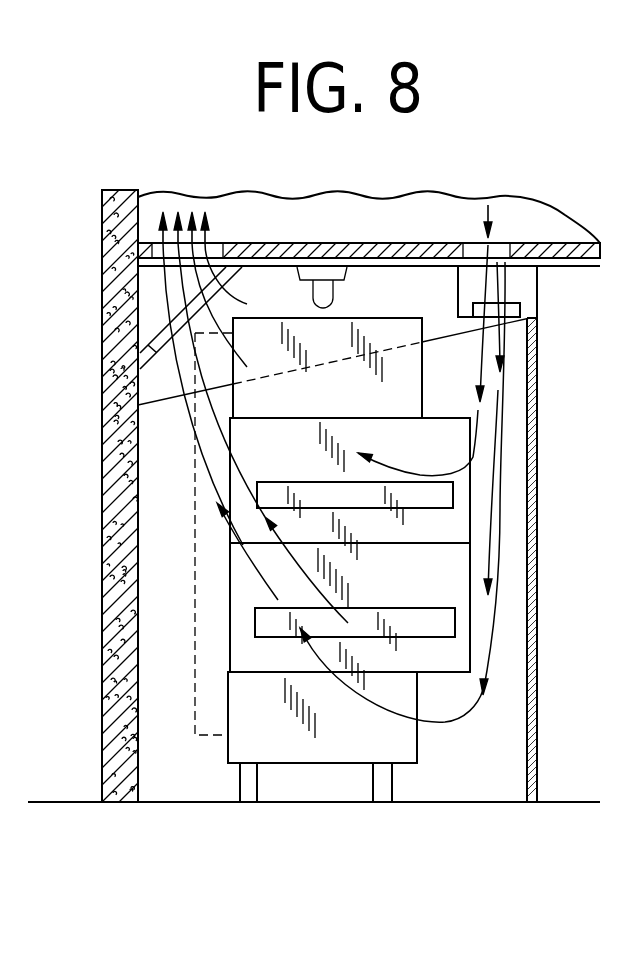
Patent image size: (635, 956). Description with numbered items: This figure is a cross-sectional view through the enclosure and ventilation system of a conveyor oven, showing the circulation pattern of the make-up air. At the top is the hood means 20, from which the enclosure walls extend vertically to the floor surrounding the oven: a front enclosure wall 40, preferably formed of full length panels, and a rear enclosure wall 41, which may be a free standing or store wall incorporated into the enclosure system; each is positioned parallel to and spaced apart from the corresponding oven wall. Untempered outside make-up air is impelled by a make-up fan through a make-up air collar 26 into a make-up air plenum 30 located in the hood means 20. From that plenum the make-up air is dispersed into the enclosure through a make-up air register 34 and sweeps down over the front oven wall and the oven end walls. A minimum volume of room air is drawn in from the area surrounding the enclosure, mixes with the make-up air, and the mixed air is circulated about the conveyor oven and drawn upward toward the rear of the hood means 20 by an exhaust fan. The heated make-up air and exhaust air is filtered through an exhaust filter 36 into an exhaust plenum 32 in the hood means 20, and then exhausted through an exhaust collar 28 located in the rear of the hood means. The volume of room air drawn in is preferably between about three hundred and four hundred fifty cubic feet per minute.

The hood means 20 is at (280, 243).
The make-up air collar 26 is at (507, 240).
The exhaust collar 28 is at (158, 228).
The make-up air plenum 30 is at (517, 283).
The exhaust plenum 32 is at (143, 293).
The make-up air register 34 is at (528, 298).
The exhaust filter 36 is at (147, 340).
The front enclosure wall 40 is at (535, 522).
The rear enclosure wall 41 is at (117, 720).